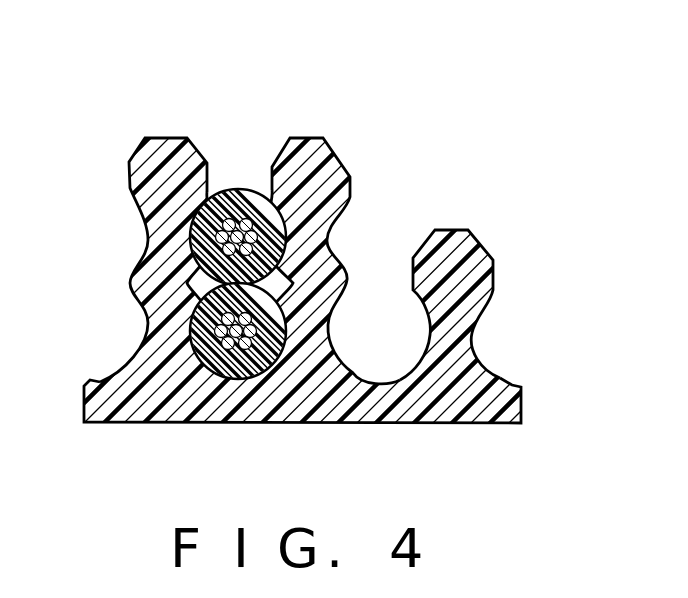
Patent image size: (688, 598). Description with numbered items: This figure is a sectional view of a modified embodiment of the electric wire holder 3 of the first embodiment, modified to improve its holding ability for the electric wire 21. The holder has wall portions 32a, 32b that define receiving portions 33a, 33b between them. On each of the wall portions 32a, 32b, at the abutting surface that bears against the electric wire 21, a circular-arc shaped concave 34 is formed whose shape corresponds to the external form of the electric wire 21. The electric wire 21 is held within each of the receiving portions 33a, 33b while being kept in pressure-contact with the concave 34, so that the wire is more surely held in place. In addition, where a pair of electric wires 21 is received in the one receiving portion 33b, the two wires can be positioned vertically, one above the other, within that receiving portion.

The electric wire holder 3 is at (508, 306).
The wall portion 32a is at (458, 230).
The wall portion 32b is at (307, 137).
The receiving portion 33a is at (377, 315).
The receiving portion 33b is at (237, 178).
The electric wire 21 is at (190, 248).
The circular-arc shaped concave 34 is at (356, 248).